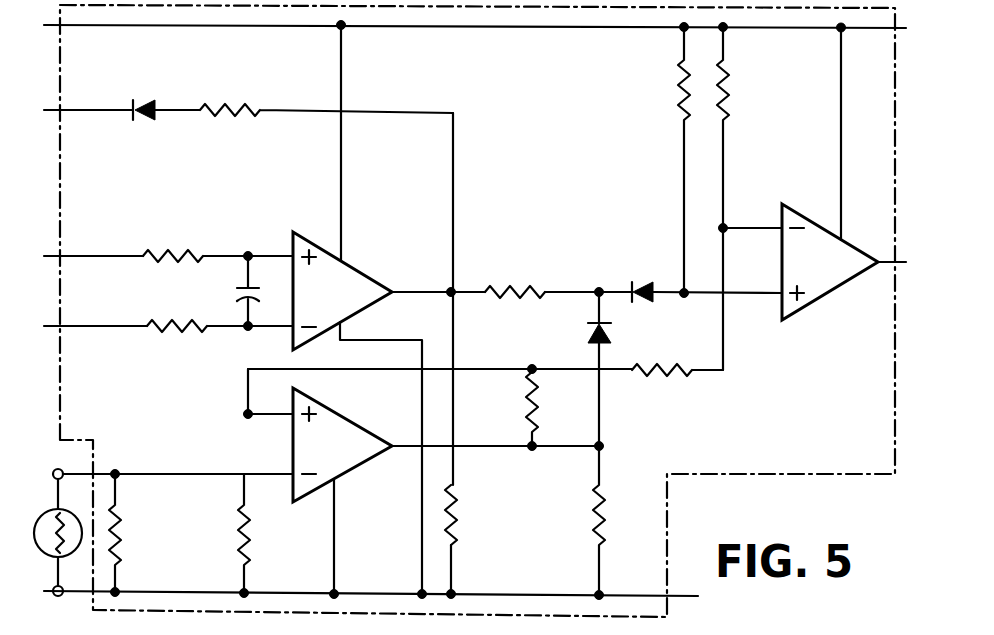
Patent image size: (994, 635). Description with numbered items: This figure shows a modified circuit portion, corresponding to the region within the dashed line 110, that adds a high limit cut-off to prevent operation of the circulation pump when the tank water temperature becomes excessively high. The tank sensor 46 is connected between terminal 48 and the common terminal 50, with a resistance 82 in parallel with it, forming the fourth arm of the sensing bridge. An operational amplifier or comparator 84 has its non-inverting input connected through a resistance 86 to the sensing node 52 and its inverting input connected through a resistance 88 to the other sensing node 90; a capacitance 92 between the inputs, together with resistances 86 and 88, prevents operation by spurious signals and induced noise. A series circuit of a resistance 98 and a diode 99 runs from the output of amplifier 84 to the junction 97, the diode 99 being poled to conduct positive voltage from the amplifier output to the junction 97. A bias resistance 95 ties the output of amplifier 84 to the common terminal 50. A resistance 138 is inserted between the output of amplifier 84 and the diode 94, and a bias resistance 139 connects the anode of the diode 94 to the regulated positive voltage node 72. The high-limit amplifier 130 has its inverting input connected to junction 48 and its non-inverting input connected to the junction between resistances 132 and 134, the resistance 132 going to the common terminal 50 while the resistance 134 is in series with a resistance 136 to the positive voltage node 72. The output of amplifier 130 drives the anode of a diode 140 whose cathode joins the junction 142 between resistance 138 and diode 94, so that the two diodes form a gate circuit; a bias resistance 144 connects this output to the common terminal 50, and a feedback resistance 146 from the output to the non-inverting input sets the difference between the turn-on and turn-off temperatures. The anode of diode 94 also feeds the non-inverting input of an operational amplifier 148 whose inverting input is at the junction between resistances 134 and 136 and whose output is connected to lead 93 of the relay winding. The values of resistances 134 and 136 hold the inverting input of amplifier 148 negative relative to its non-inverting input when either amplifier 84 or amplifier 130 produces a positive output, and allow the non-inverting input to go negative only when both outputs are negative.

The tank sensor 46 is at (101, 494).
The terminal 48 is at (178, 458).
The common terminal 50 is at (371, 576).
The sensing node 52 is at (93, 238).
The regulated positive voltage node 72 is at (475, 49).
The resistance 82 is at (139, 535).
The operational amplifier 84 is at (357, 413).
The resistance 86 is at (218, 231).
The resistance 88 is at (220, 309).
The sensing node 90 is at (95, 306).
The capacitance 92 is at (235, 291).
The lead 93 is at (885, 236).
The diode 94 is at (707, 273).
The bias resistance 95 is at (470, 515).
The junction 97 is at (88, 90).
The resistance 98 is at (304, 135).
The diode 99 is at (155, 133).
The dashed line 110 is at (477, 311).
The operational amplifier 130 is at (424, 481).
The resistance 132 is at (274, 536).
The resistance 134 is at (677, 395).
The resistance 136 is at (753, 198).
The resistance 138 is at (515, 267).
The bias resistance 139 is at (653, 160).
The diode 140 is at (623, 369).
The junction 142 is at (588, 271).
The bias resistance 144 is at (626, 520).
The resistance 146 is at (554, 406).
The operational amplifier 148 is at (800, 189).